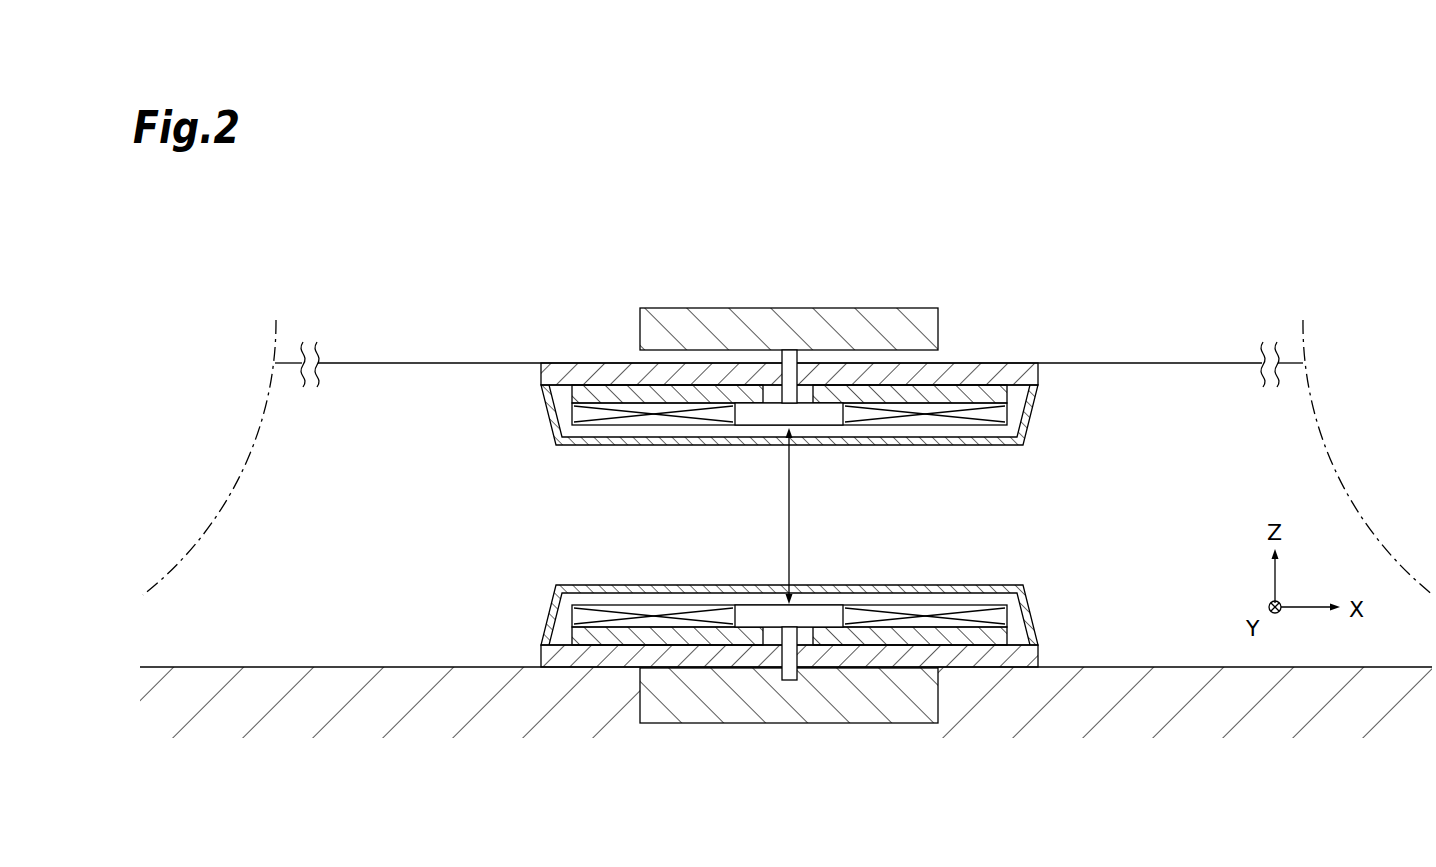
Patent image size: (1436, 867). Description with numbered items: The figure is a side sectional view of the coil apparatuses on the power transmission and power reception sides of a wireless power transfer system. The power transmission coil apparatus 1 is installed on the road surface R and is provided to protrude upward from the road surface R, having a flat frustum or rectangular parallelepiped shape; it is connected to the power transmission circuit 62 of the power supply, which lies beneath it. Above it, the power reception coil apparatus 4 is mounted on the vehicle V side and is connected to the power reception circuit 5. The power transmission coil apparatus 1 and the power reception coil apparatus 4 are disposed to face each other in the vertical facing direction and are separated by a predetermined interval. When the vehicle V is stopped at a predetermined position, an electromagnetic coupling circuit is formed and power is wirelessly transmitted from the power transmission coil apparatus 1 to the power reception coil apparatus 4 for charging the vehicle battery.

The power transmission coil apparatus 1 is at (803, 662).
The power reception coil apparatus 4 is at (803, 371).
The power reception circuit 5 is at (789, 307).
The power transmission circuit 62 is at (686, 724).
The vehicle V is at (383, 365).
The road surface R is at (318, 666).